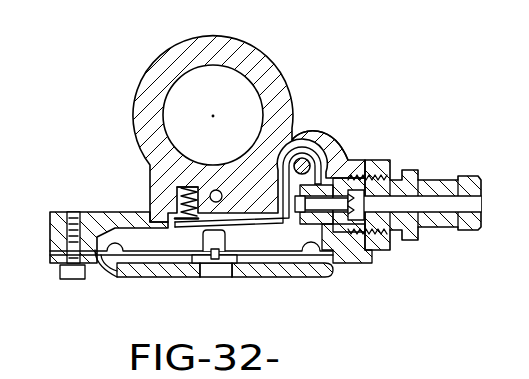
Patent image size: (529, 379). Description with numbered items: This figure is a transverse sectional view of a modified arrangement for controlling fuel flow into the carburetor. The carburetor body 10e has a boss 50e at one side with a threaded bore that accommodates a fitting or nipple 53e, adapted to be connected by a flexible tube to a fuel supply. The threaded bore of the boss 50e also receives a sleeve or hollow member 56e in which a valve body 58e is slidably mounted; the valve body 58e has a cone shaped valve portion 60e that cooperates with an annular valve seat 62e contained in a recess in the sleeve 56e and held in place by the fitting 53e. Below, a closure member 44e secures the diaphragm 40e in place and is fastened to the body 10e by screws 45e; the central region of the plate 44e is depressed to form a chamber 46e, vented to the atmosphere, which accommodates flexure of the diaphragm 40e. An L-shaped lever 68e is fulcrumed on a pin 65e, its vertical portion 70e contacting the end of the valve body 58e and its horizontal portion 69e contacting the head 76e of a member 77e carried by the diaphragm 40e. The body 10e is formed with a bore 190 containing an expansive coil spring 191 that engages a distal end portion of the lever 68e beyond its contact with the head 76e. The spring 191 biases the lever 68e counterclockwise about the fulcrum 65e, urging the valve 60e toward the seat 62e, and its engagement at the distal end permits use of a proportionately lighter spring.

The carburetor body 10e is at (274, 54).
The diaphragm 40e is at (121, 268).
The closure member 44e is at (237, 276).
The screws 45e is at (68, 282).
The chamber 46e is at (122, 265).
The boss 50e is at (363, 160).
The fitting or nipple 53e is at (419, 172).
The sleeve or hollow member 56e is at (345, 180).
The valve body 58e is at (327, 214).
The cone shaped valve portion 60e is at (365, 204).
The annular valve seat 62e is at (372, 161).
The pin 65e is at (303, 158).
The L-shaped lever 68e is at (273, 229).
The horizontal portion 69e is at (247, 229).
The vertical portion 70e is at (282, 180).
The head 76e is at (212, 239).
The member 77e is at (213, 259).
The bore 190 is at (179, 195).
The expansive coil spring 191 is at (197, 190).